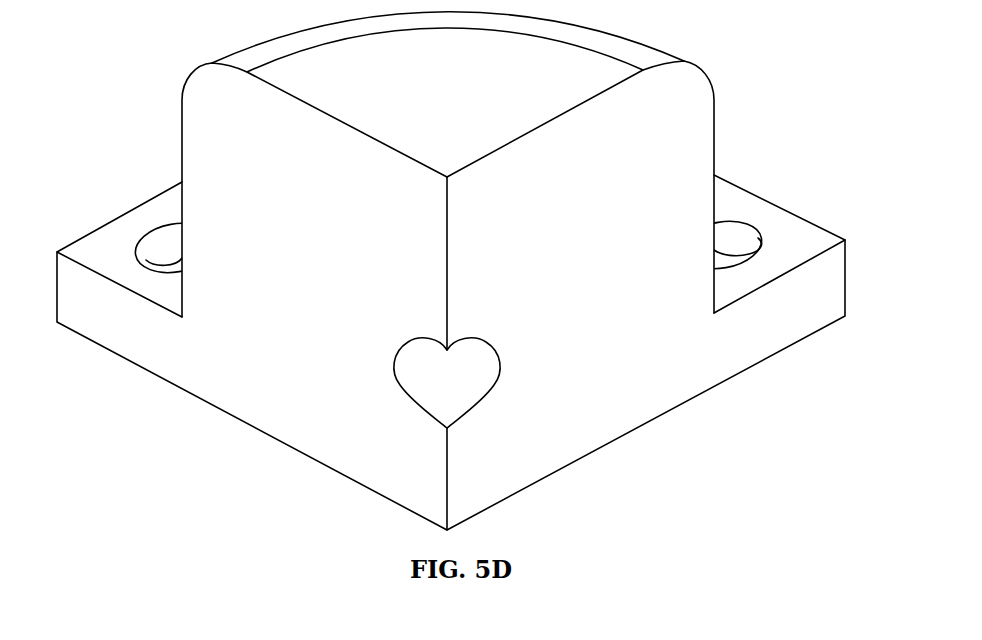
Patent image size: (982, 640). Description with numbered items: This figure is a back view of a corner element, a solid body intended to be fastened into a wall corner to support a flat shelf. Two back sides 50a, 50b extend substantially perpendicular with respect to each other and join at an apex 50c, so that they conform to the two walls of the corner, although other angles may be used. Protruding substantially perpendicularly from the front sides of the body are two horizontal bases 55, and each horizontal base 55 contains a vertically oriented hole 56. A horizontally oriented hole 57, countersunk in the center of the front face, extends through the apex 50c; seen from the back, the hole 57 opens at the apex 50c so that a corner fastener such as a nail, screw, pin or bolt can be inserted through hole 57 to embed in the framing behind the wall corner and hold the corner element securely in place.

The back side 50a is at (654, 115).
The back side 50b is at (230, 117).
The apex 50c is at (447, 255).
The horizontal base 55 is at (163, 200).
The vertically oriented hole 56 is at (163, 247).
The horizontally oriented hole 57 is at (458, 383).